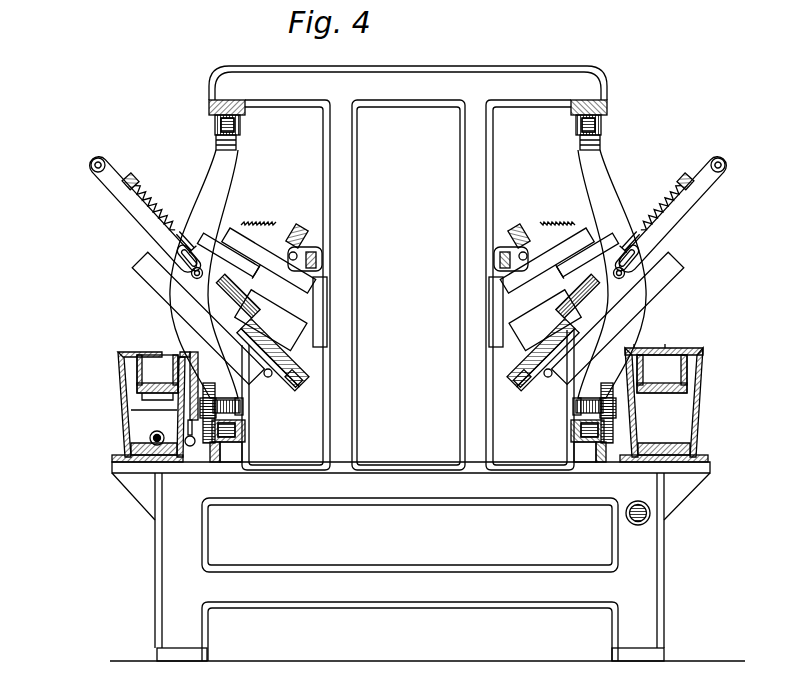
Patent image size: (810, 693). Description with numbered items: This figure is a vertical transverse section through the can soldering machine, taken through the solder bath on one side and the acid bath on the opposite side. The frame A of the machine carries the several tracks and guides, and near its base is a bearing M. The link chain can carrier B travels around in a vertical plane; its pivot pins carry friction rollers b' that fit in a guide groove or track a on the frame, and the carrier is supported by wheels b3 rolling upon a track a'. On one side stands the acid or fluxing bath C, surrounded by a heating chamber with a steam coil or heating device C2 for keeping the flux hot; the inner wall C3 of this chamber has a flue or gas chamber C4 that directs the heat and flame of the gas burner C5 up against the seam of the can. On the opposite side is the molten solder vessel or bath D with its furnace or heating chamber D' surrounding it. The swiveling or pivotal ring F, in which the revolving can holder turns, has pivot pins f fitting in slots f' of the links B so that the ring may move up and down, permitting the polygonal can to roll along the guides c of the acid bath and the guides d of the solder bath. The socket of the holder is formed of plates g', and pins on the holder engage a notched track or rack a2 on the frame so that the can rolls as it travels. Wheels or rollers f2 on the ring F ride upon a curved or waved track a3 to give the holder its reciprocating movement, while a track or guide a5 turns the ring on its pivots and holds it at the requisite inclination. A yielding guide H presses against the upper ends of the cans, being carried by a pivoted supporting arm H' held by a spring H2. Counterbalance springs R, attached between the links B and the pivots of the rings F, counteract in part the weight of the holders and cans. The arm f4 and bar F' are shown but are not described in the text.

The frame A is at (345, 392).
The link chain can carrier B is at (214, 316).
The motor shaft bearing M is at (650, 513).
The guide groove or track a is at (425, 278).
The track a' is at (398, 465).
The notched track or rack a2 is at (408, 319).
The curved or waved track a3 is at (286, 370).
The track or guide a5 is at (283, 388).
The friction rollers b' is at (407, 278).
The wheels b3 is at (216, 399).
The pivot pins f is at (407, 273).
The slots f' is at (410, 256).
The wheels or rollers f2 is at (268, 378).
The lever arm f4 is at (115, 188).
The plates g' is at (342, 317).
The swiveling or pivotal ring F is at (637, 318).
The carriage bar F' is at (407, 254).
The yielding guide H is at (407, 271).
The pivoted supporting arm H' is at (408, 242).
The spring H2 is at (297, 228).
The counterbalance springs R is at (143, 215).
The guides c is at (158, 351).
The acid or fluxing bath C is at (148, 370).
The steam coil or heating device C2 is at (149, 440).
The inner wall C3 is at (184, 392).
The flue or gas chamber C4 is at (185, 398).
The gas burner C5 is at (185, 412).
The guides d is at (640, 351).
The molten solder vessel or bath D is at (682, 402).
The furnace or heating chamber D' is at (662, 396).